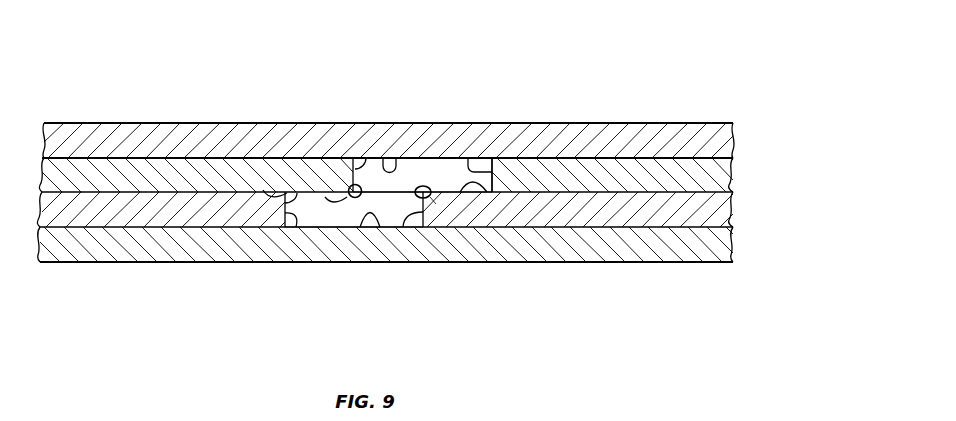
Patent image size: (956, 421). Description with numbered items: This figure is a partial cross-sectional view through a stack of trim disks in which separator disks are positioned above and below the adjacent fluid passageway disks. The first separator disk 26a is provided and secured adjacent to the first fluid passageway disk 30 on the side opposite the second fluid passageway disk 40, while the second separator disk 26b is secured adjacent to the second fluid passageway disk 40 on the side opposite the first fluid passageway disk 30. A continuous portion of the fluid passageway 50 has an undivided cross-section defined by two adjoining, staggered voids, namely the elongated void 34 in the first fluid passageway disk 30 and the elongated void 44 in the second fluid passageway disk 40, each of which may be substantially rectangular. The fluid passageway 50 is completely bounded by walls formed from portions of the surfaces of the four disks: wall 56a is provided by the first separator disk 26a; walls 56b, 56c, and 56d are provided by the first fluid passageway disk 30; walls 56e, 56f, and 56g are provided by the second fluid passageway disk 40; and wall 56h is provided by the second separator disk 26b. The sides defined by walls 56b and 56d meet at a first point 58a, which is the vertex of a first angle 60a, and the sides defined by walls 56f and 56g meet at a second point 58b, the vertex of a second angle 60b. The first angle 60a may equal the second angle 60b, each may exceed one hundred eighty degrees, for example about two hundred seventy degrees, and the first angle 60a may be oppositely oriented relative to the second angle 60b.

The first separator disk 26a is at (713, 143).
The second separator disk 26b is at (698, 247).
The first fluid passageway disk 30 is at (730, 176).
The second fluid passageway disk 40 is at (720, 212).
The elongated void 34 is at (470, 162).
The elongated void 44 is at (340, 208).
The fluid passageway 50 is at (412, 174).
The wall 56a is at (395, 162).
The wall 56b is at (368, 160).
The wall 56c is at (493, 168).
The wall 56d is at (263, 190).
The wall 56e is at (297, 217).
The wall 56f is at (404, 222).
The wall 56g is at (487, 193).
The wall 56h is at (368, 214).
The first point 58a is at (325, 197).
The second point 58b is at (430, 197).
The first angle 60a is at (347, 187).
The second angle 60b is at (425, 186).